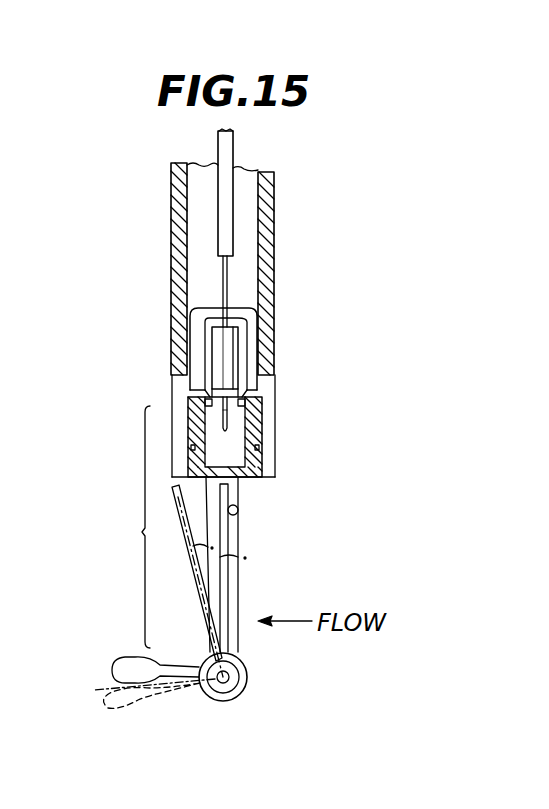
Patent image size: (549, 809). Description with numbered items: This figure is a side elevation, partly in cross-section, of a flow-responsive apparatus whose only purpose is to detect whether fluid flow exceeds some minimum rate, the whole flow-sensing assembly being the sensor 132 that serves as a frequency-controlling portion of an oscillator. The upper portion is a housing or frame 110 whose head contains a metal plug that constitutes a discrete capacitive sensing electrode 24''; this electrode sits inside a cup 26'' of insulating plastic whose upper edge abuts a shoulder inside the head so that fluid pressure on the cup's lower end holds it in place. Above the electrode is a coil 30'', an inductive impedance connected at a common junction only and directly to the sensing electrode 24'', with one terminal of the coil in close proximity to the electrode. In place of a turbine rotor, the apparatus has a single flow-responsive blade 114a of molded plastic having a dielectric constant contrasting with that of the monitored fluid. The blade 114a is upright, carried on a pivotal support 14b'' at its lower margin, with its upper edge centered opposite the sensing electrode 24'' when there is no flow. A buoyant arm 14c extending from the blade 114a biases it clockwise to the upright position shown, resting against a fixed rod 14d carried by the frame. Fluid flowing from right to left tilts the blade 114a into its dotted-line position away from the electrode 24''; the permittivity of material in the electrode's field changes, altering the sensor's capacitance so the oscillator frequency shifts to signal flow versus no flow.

The housing 110 is at (278, 321).
The coil 30'' is at (185, 326).
The cup 26'' is at (267, 437).
The sensing electrode 24'' is at (280, 437).
The flow-responsive blade 114a is at (240, 578).
The fixed rod 14d is at (238, 512).
The flow sensor 132 is at (164, 541).
The buoyant arm 14c is at (127, 665).
The pivotal support 14b'' is at (259, 688).